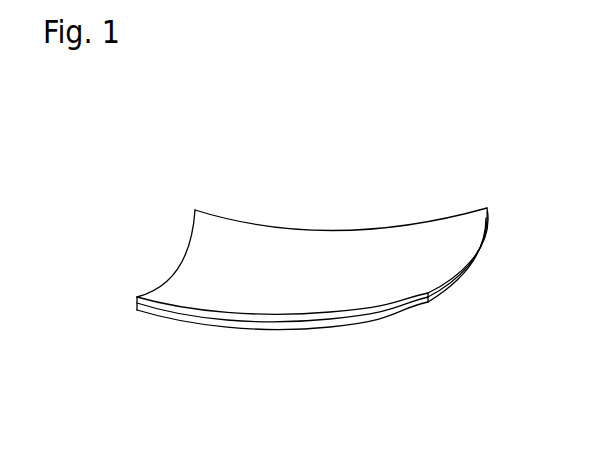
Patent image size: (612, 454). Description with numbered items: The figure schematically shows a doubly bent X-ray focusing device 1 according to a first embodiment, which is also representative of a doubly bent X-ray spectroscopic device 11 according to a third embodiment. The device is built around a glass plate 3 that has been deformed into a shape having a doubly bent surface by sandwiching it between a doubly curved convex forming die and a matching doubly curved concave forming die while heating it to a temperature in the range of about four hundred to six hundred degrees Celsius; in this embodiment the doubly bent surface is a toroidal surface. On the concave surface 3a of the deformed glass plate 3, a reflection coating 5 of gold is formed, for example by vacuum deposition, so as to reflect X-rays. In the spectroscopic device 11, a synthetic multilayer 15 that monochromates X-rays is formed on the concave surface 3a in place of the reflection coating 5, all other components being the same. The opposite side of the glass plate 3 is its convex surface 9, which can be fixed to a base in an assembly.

The doubly bent X-ray focusing device 1 is at (332, 237).
The doubly bent X-ray spectroscopic device 11 is at (332, 237).
The reflection coating 5 is at (312, 214).
The synthetic multilayer 15 is at (418, 245).
The glass plate 3 is at (460, 283).
The concave surface 3a is at (265, 323).
The convex surface 9 is at (367, 323).